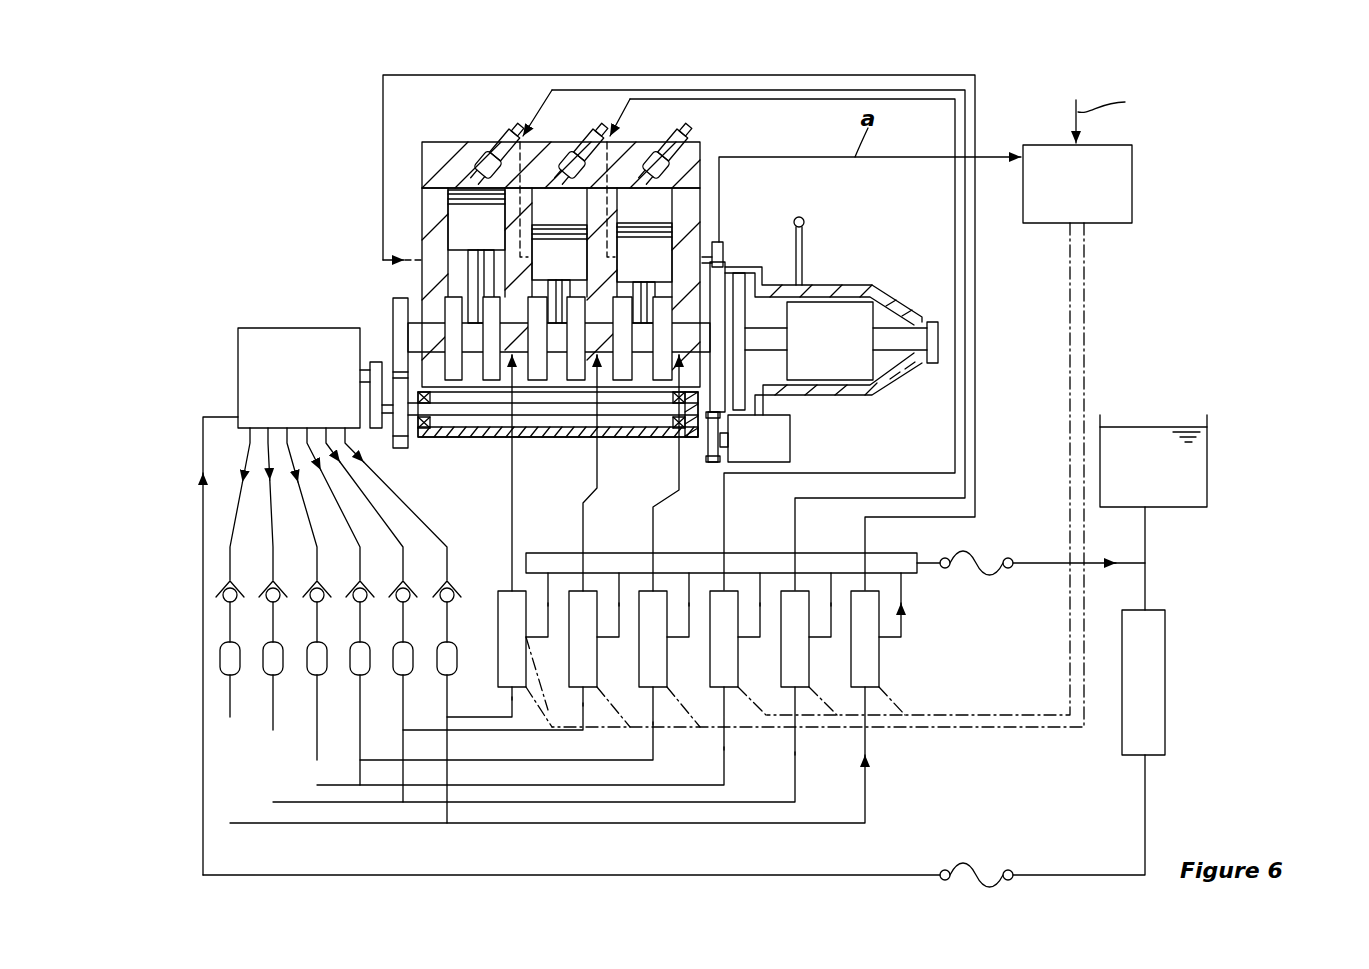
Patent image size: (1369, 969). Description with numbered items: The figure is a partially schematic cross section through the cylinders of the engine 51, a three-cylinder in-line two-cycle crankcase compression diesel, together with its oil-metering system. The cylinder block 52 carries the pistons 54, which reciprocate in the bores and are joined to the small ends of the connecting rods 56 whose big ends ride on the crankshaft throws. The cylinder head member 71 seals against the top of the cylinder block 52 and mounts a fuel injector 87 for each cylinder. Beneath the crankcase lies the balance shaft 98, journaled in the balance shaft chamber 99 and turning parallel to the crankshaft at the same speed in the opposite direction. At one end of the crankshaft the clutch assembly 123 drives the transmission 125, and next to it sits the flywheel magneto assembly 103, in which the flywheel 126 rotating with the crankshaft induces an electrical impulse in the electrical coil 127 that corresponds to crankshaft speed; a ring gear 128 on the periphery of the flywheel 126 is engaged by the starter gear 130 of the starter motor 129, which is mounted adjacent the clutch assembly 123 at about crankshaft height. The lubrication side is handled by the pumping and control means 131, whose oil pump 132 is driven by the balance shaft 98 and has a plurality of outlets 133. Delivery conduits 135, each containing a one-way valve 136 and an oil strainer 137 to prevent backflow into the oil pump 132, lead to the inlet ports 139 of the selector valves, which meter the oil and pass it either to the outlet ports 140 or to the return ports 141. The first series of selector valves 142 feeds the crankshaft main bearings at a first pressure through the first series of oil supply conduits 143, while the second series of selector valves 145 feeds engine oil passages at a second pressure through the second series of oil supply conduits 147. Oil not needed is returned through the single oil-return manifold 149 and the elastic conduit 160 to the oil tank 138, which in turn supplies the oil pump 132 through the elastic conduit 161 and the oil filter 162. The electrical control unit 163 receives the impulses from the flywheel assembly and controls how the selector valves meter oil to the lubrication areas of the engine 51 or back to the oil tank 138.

The engine 51 is at (798, 71).
The cylinder block 52 is at (495, 287).
The pistons 54 is at (463, 228).
The connecting rods 56 is at (558, 292).
The cylinder head member 71 is at (422, 160).
The fuel injector 87 is at (482, 158).
The balance shaft 98 is at (430, 340).
The balance shaft chamber 99 is at (562, 430).
The flywheel magneto assembly 103 is at (737, 335).
The clutch assembly 123 is at (722, 320).
The transmission 125 is at (742, 315).
The flywheel 126 is at (762, 268).
The electrical coil 127 is at (732, 242).
The ring gear 128 is at (720, 440).
The starter motor 129 is at (790, 440).
The starter gear 130 is at (714, 460).
The pumping and control means 131 is at (220, 266).
The oil pump 132 is at (238, 342).
The outlets 133 is at (233, 443).
The delivery conduits 135 is at (273, 524).
The one-way valves 136 is at (265, 592).
The oil strainers 137 is at (263, 645).
The oil tank 138 is at (1207, 453).
The inlet ports 139 is at (516, 690).
The outlet ports 140 is at (517, 582).
The return ports 141 is at (538, 712).
The first series of selector valves 142 is at (496, 580).
The first series of oil supply conduits 143 is at (653, 545).
The second series of selector valves 145 is at (879, 662).
The second series of oil supply conduits 147 is at (893, 515).
The oil-return manifold 149 is at (910, 553).
The elastic conduit 160 is at (980, 573).
The elastic conduit 161 is at (975, 870).
The oil filter 162 is at (1165, 665).
The electrical control unit 163 is at (1132, 183).